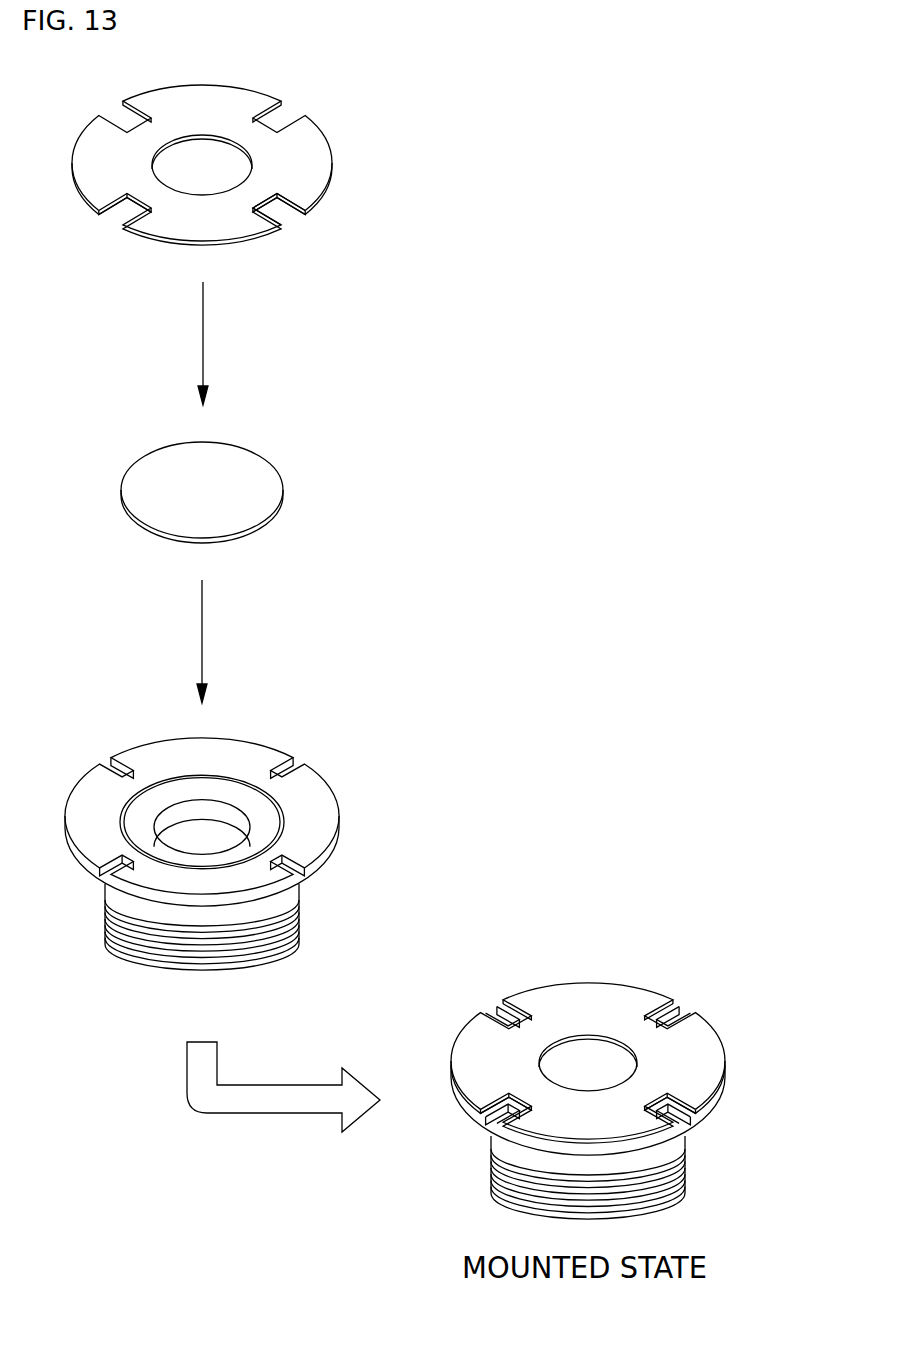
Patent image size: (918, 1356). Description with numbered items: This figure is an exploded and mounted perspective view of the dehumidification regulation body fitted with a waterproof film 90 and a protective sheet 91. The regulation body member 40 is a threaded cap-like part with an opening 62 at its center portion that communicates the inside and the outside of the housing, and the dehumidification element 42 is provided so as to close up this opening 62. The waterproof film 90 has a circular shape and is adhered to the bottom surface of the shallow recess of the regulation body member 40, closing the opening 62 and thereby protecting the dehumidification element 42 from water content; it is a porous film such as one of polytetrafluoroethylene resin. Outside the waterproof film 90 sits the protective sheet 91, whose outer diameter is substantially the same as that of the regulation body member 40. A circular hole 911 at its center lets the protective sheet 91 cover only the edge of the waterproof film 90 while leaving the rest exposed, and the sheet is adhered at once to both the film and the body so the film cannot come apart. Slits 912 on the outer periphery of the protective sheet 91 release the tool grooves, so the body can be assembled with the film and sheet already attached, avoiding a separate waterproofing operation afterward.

The protective sheet 91 is at (410, 595).
The circular hole 911 is at (213, 133).
The slit 912 is at (293, 222).
The waterproof film 90 is at (267, 460).
The regulation body member 40 is at (443, 962).
The opening 62 is at (208, 800).
The dehumidification element 42 is at (214, 833).